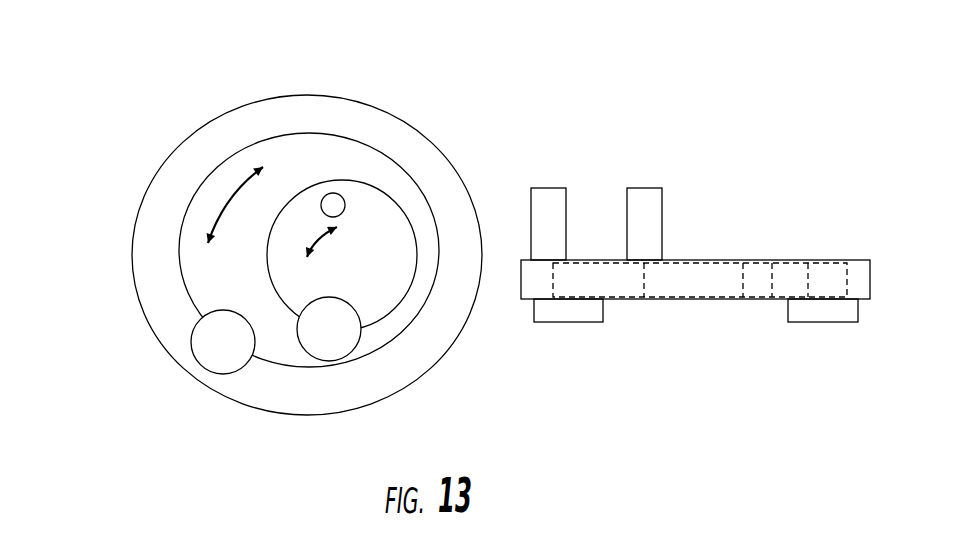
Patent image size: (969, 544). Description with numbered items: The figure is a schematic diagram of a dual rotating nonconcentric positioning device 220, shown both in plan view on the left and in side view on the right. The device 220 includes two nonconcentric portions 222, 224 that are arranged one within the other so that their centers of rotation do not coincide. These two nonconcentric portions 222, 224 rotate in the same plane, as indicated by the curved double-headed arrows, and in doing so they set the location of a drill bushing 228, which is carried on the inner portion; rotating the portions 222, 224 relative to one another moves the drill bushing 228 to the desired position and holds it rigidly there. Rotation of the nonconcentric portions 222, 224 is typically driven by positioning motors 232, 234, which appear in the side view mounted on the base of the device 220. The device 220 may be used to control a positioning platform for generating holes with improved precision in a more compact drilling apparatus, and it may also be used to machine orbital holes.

The dual rotating nonconcentric positioning device 220 is at (451, 228).
The nonconcentric portion 222 is at (197, 232).
The nonconcentric portion 224 is at (383, 298).
The drill bushing 228 is at (338, 205).
The positioning motor 232 is at (552, 222).
The positioning motor 234 is at (649, 220).